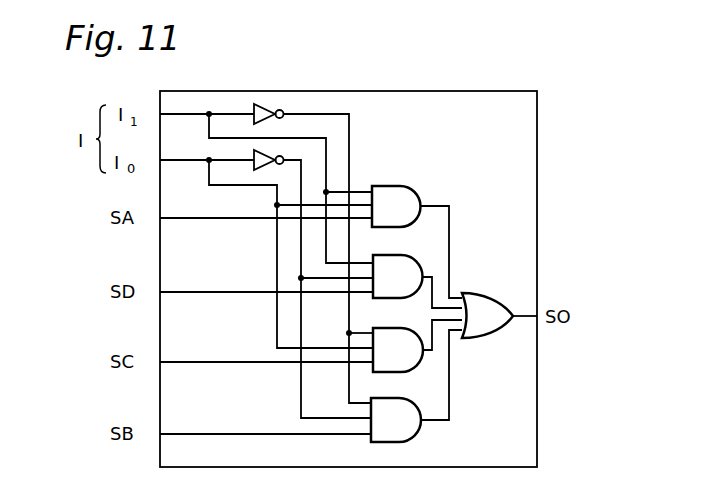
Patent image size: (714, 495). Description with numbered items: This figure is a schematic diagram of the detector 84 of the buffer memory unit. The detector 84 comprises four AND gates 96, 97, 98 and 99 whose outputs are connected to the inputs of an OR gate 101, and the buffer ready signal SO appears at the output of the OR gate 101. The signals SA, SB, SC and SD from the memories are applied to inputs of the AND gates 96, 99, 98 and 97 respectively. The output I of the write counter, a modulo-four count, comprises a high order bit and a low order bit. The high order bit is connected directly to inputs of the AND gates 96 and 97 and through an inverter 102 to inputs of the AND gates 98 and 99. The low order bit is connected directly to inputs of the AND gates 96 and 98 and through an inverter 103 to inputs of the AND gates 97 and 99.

The detector 84 is at (538, 190).
The AND gate 96 is at (417, 188).
The AND gate 97 is at (415, 268).
The AND gate 98 is at (418, 326).
The AND gate 99 is at (427, 396).
The OR gate 101 is at (489, 294).
The inverter 102 is at (264, 104).
The inverter 103 is at (254, 150).